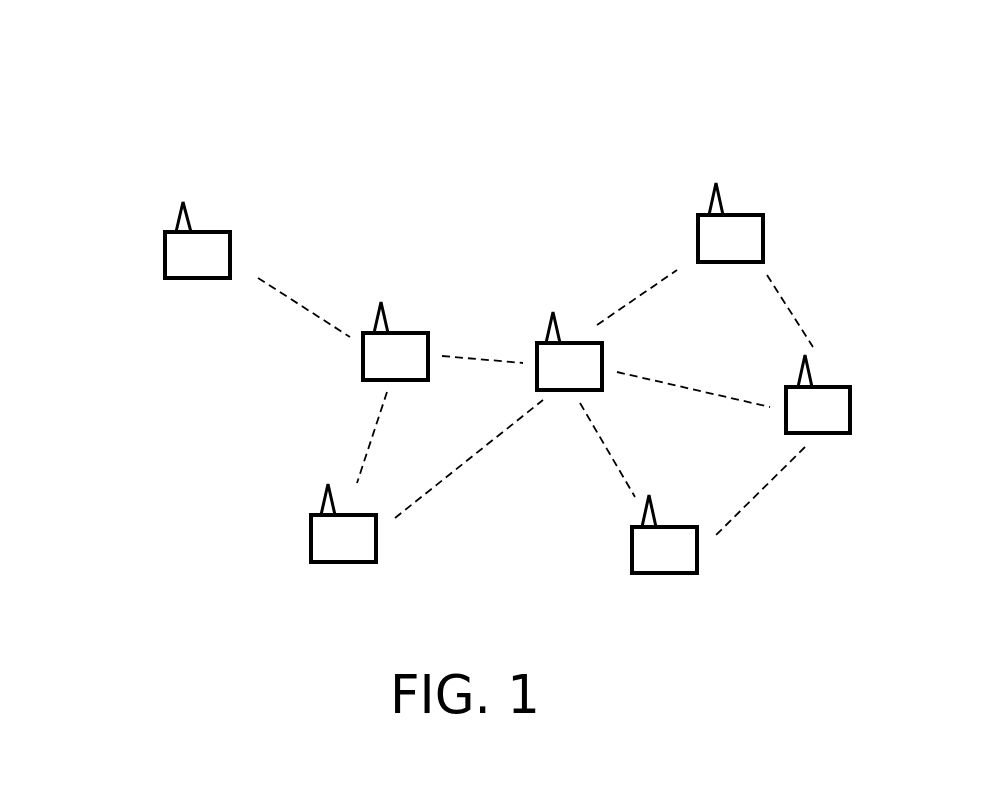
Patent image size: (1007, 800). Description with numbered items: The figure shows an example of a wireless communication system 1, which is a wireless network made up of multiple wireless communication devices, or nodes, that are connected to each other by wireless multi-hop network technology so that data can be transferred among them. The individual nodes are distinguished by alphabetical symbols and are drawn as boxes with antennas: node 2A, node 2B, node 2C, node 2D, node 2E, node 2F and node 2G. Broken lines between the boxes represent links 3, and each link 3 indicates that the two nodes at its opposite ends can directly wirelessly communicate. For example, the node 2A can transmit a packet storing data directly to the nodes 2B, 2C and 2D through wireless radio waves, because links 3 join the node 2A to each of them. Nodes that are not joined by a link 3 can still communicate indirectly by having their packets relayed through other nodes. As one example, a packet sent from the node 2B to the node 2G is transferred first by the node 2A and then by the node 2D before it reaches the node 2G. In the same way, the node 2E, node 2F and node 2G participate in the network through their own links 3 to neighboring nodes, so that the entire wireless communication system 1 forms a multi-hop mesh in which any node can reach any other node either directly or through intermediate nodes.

The wireless communication system 1 is at (126, 97).
The node A 2A is at (405, 333).
The node B 2B is at (165, 256).
The node C 2C is at (311, 540).
The node D 2D is at (541, 343).
The node E 2E is at (632, 548).
The node F 2F is at (763, 229).
The node G 2G is at (850, 396).
The link 3 is at (283, 293).